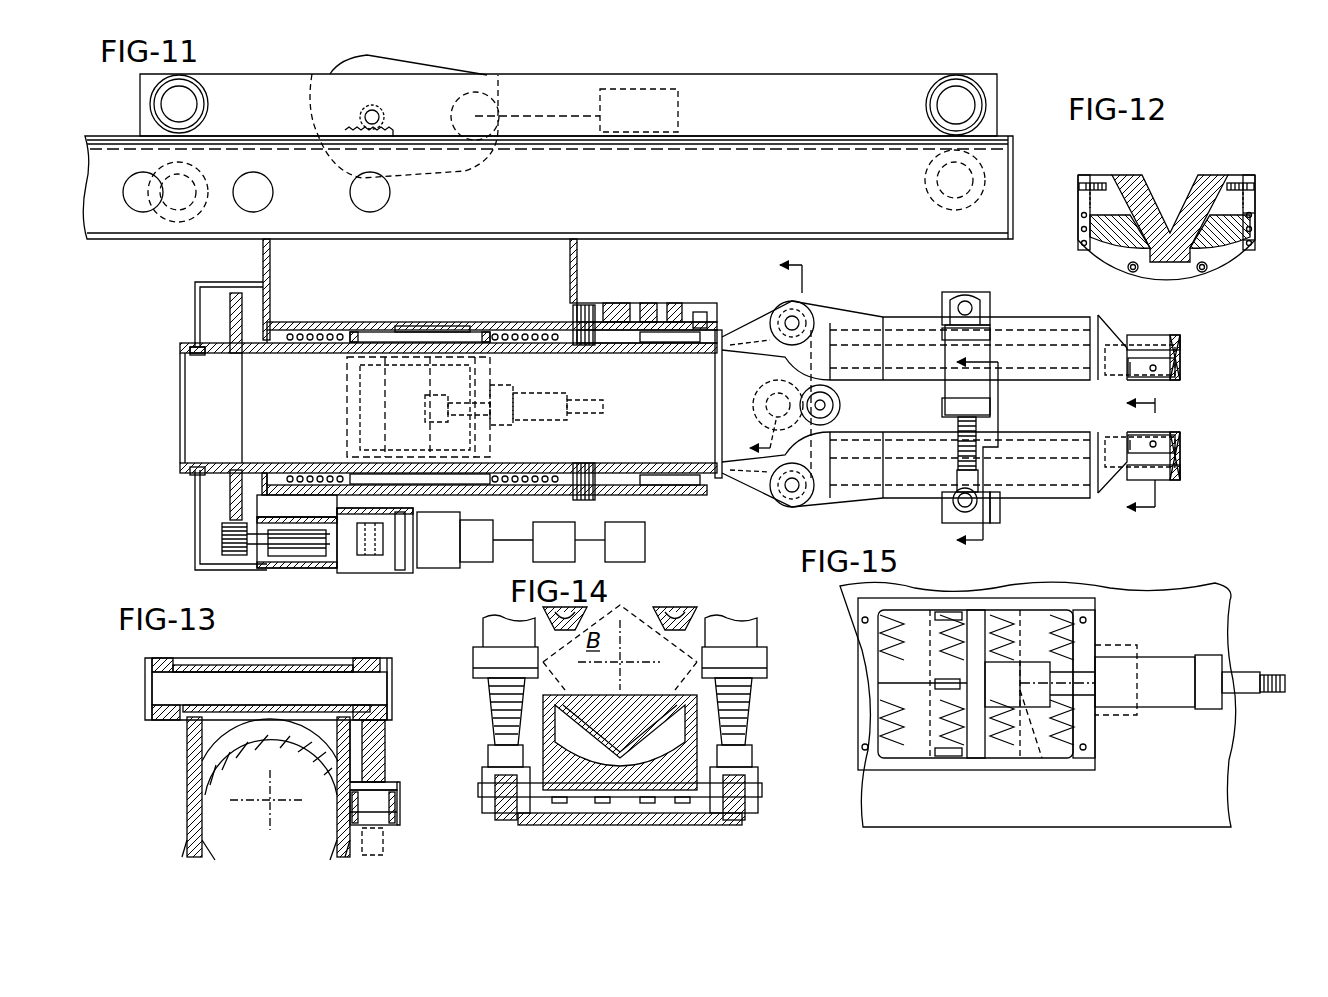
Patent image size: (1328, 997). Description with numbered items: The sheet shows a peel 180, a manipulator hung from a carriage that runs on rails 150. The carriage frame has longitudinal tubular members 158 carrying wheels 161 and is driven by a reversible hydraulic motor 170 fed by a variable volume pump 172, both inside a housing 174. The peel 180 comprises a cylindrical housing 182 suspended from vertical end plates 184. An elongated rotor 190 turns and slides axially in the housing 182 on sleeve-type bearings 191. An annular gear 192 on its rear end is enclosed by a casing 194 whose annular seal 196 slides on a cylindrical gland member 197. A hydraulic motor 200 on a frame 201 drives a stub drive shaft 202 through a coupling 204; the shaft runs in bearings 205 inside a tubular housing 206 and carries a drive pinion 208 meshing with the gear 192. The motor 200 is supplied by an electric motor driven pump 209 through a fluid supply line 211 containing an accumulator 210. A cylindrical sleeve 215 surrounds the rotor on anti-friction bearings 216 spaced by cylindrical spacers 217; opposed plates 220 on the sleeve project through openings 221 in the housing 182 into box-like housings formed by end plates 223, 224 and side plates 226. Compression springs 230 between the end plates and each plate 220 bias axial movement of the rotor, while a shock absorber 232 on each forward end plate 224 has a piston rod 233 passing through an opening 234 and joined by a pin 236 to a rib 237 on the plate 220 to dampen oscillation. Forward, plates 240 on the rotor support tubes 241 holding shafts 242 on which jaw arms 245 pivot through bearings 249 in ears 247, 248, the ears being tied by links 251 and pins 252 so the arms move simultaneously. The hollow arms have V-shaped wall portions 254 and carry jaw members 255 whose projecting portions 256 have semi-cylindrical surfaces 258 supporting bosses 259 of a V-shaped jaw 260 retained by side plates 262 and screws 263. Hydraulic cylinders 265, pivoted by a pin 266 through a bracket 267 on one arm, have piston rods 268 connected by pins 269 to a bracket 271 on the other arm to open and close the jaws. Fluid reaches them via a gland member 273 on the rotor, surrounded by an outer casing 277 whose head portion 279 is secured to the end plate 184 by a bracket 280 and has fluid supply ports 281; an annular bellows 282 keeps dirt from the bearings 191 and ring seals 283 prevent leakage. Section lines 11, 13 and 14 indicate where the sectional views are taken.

In FIG. 11, the section line 11- 11 is at (1157, 455).
In FIG. 11, the section line 13- 13 is at (779, 357).
In FIG. 11, the section line 14- 14 is at (994, 451).
In FIG. 11, the rails 150 is at (833, 242).
In FIG. 11, the longitudinal tubular members 158 is at (808, 74).
In FIG. 11, the wheels 161 is at (151, 104).
In FIG. 11, the hydraulic motor 170 is at (508, 70).
In FIG. 11, the hydraulic pump 172 is at (640, 85).
In FIG. 11, the housing 174 is at (462, 68).
In FIG. 11, the peel 180 is at (190, 297).
In FIG. 11, the cylindrical housing 182 is at (420, 332).
In FIG. 15, the cylindrical housing 182 is at (1200, 602).
In FIG. 11, the vertical end plates 184 is at (576, 252).
In FIG. 11, the rotor 190 is at (608, 470).
In FIG. 13, the rotor 190 is at (255, 725).
In FIG. 11, the sleeve-type anti-friction bearings 191 is at (300, 463).
In FIG. 11, the annular gear 192 is at (230, 330).
In FIG. 11, the casing 194 is at (195, 525).
In FIG. 11, the annular seal 196 is at (195, 472).
In FIG. 11, the cylindrical gland member 197 is at (205, 452).
In FIG. 11, the hydraulic motor 200 is at (437, 565).
In FIG. 11, the frame 201 is at (340, 573).
In FIG. 11, the stub drive shaft 202 is at (282, 556).
In FIG. 11, the coupling 204 is at (372, 556).
In FIG. 11, the bearings 205 is at (258, 556).
In FIG. 11, the tubular housing 206 is at (298, 562).
In FIG. 11, the drive pinion 208 is at (222, 545).
In FIG. 11, the electric motor driven pump 209 is at (645, 540).
In FIG. 11, the accumulator 210 is at (533, 552).
In FIG. 11, the fluid supply line 211 is at (590, 540).
In FIG. 11, the cylindrical sleeve 215 is at (410, 326).
In FIG. 11, the anti-friction bearings 216 is at (355, 332).
In FIG. 11, the cylindrical spacers 217 is at (338, 333).
In FIG. 11, the brackets or plates 220 is at (390, 400).
In FIG. 15, the brackets or plates 220 is at (975, 612).
In FIG. 15, the openings 221 is at (878, 683).
In FIG. 11, the end plate 223 is at (350, 437).
In FIG. 15, the end plate 223 is at (862, 645).
In FIG. 15, the forward end plate 224 is at (1090, 612).
In FIG. 15, the side plates 226 is at (940, 598).
In FIG. 15, the compression springs 230 is at (880, 630).
In FIG. 11, the hydraulic cylinder or shock absorber 232 is at (560, 392).
In FIG. 15, the hydraulic cylinder or shock absorber 232 is at (1190, 660).
In FIG. 15, the piston rod 233 is at (1090, 683).
In FIG. 15, the opening 234 is at (1110, 635).
In FIG. 15, the pin 236 is at (1042, 760).
In FIG. 15, the rib 237 is at (1020, 672).
In FIG. 13, the parallel spaced plates 240 is at (192, 775).
In FIG. 13, the tubes 241 is at (264, 672).
In FIG. 13, the shafts 242 is at (312, 690).
In FIG. 11, the jaw arms 245 is at (898, 320).
In FIG. 14, the jaw arms 245 is at (690, 607).
In FIG. 11, the ear 247 is at (785, 340).
In FIG. 13, the ear 247 is at (160, 655).
In FIG. 11, the ear 248 is at (775, 472).
In FIG. 13, the ear 248 is at (385, 840).
In FIG. 13, the bearings 249 is at (175, 665).
In FIG. 11, the links 251 is at (770, 380).
In FIG. 13, the links 251 is at (360, 785).
In FIG. 11, the pins 252 is at (722, 410).
In FIG. 13, the pins 252 is at (397, 800).
In FIG. 14, the V-shaped wall portions 254 is at (672, 612).
In FIG. 11, the jaw members 255 is at (1117, 325).
In FIG. 12, the jaw members 255 is at (1238, 252).
In FIG. 11, the axially projecting portions 256 is at (1153, 335).
In FIG. 12, the axially projecting portions 256 is at (1098, 235).
In FIG. 11, the semi-cylindrical surfaces 258 is at (1178, 340).
In FIG. 12, the semi-cylindrical surfaces 258 is at (1255, 238).
In FIG. 11, the semi-cylindrical bosses 259 is at (1168, 435).
In FIG. 12, the semi-cylindrical bosses 259 is at (1255, 205).
In FIG. 12, the V-shaped jaw 260 is at (1185, 218).
In FIG. 11, the side plates 262 is at (1176, 368).
In FIG. 12, the side plates 262 is at (1080, 200).
In FIG. 11, the screws 263 is at (1160, 362).
In FIG. 12, the screws 263 is at (1095, 182).
In FIG. 11, the hydraulic cylinders 265 is at (945, 398).
In FIG. 14, the hydraulic cylinders 265 is at (483, 636).
In FIG. 11, the pin 266 is at (962, 301).
In FIG. 11, the bracket 267 is at (985, 292).
In FIG. 14, the piston rod 268 is at (490, 700).
In FIG. 11, the pin 269 is at (950, 505).
In FIG. 14, the pin 269 is at (482, 790).
In FIG. 11, the bracket 271 is at (1000, 503).
In FIG. 14, the bracket 271 is at (580, 826).
In FIG. 11, the gland member 273 is at (670, 343).
In FIG. 11, the outer casing 277 is at (700, 312).
In FIG. 11, the head portion 279 is at (675, 303).
In FIG. 11, the bracket 280 is at (600, 303).
In FIG. 11, the fluid supply ports 281 is at (648, 303).
In FIG. 11, the annular bellows 282 is at (575, 495).
In FIG. 11, the ring seals 283 is at (615, 343).